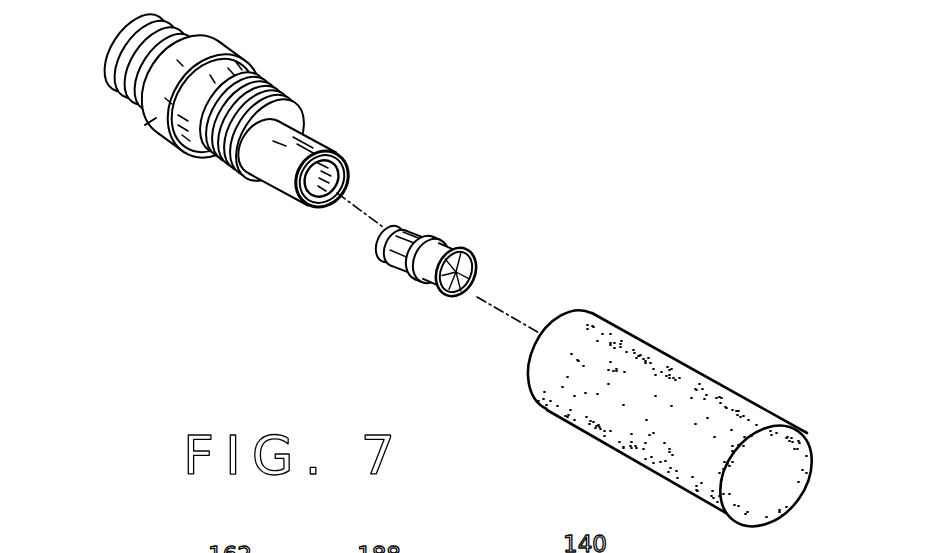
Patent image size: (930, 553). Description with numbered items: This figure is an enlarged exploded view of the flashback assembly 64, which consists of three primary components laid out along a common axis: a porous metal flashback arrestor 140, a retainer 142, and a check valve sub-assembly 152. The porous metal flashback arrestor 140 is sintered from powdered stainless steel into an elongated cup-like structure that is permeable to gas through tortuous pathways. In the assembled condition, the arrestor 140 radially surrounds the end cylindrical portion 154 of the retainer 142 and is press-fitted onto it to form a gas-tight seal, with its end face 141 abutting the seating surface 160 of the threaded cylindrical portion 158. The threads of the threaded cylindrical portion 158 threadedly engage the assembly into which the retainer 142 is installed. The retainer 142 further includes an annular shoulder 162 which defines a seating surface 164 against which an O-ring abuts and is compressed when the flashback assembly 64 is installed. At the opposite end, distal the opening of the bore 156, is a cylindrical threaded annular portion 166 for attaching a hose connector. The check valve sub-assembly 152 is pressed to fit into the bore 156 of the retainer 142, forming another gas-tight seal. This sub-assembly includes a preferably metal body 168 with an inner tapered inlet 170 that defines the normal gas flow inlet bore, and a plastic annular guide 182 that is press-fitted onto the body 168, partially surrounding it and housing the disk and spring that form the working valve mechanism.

The flashback assembly 64 is at (429, 272).
The porous metal flashback arrestor 140 is at (671, 390).
The end face 141 is at (565, 313).
The retainer 142 is at (231, 129).
The check valve sub-assembly 152 is at (413, 245).
The end cylindrical portion 154 is at (286, 165).
The bore 156 is at (349, 179).
The threaded cylindrical portion 158 is at (281, 94).
The seating surface 160 is at (303, 119).
The annular shoulder 162 is at (152, 104).
The seating surface 164 is at (221, 110).
The cylindrical threaded annular portion 166 is at (116, 46).
The body 168 is at (427, 281).
The inner tapered inlet 170 is at (457, 297).
The annular guide 182 is at (403, 277).